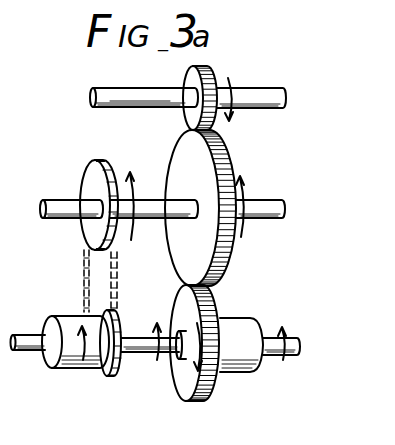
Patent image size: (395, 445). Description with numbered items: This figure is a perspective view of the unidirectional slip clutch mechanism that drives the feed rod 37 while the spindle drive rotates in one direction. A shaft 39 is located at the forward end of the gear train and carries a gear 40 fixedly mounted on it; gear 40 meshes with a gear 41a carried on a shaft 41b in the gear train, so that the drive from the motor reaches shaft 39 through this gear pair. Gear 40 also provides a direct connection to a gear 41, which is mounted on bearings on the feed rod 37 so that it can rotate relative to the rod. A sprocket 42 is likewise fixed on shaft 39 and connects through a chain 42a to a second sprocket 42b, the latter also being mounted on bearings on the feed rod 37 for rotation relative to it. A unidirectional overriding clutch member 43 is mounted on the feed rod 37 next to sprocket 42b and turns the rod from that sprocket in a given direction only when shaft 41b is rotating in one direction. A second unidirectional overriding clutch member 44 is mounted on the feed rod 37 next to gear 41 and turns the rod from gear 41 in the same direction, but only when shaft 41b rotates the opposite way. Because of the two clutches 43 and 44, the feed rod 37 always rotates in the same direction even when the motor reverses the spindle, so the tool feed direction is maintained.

The feed rod 37 is at (297, 345).
The shaft 39 is at (145, 204).
The gear 40 is at (224, 151).
The gear 41 is at (183, 386).
The gear 41a is at (206, 68).
The shaft 41b is at (157, 79).
The sprocket 42 is at (97, 176).
The chain 42a is at (84, 265).
The second sprocket 42b is at (100, 370).
The unidirectional overriding clutch member 43 is at (71, 302).
The second unidirectional overriding clutch member 44 is at (238, 330).